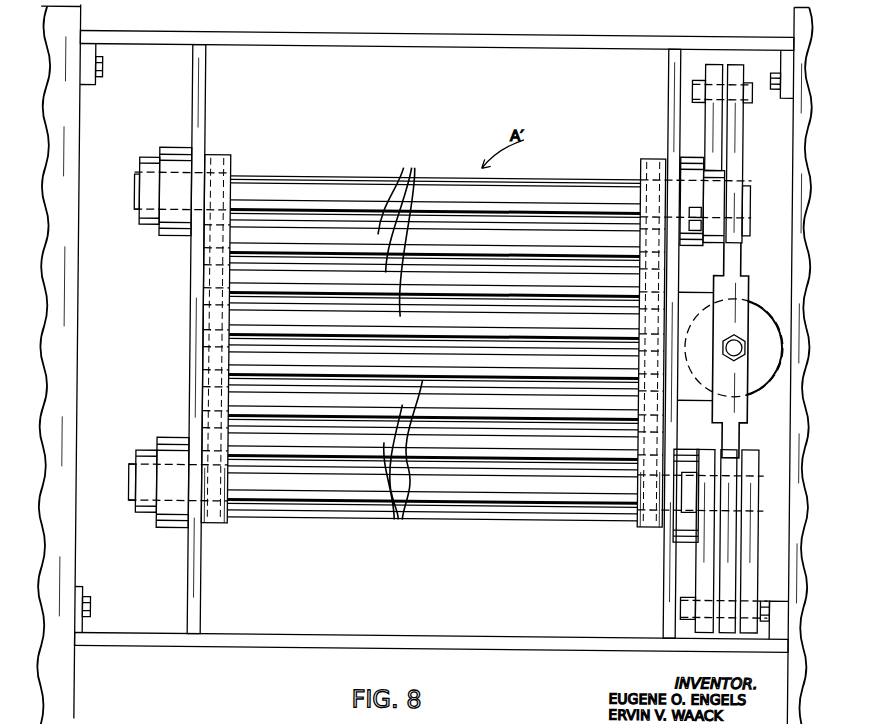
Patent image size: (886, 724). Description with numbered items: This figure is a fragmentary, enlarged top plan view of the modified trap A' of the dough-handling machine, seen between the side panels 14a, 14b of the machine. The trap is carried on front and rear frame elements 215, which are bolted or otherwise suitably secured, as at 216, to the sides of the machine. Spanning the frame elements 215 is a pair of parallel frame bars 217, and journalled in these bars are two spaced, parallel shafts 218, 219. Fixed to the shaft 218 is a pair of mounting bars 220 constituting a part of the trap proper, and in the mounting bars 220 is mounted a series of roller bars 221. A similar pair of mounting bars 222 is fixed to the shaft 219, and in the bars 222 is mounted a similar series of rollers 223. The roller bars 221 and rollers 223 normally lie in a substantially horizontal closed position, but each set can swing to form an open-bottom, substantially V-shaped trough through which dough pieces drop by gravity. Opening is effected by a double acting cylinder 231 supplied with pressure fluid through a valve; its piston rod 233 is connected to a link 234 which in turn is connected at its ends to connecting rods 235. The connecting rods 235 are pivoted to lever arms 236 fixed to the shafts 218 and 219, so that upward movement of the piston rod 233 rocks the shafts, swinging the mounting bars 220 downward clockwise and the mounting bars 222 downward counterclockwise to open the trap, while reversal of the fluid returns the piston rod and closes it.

The right side frame panel 14a is at (791, 175).
The left side frame panel 14b is at (78, 322).
The frame element 215 is at (426, 45).
The bolt 216 is at (101, 69).
The frame bar 217 is at (204, 133).
The shaft 218 is at (132, 488).
The shaft 219 is at (137, 198).
The mounting bar 220 is at (230, 515).
The roller bar 221 is at (403, 460).
The mounting bar 222 is at (231, 168).
The roller 223 is at (395, 232).
The double acting cylinder 231 is at (768, 305).
The piston rod 233 is at (730, 335).
The link 234 is at (740, 275).
The connecting rod 235 is at (710, 128).
The lever arm 236 is at (737, 152).